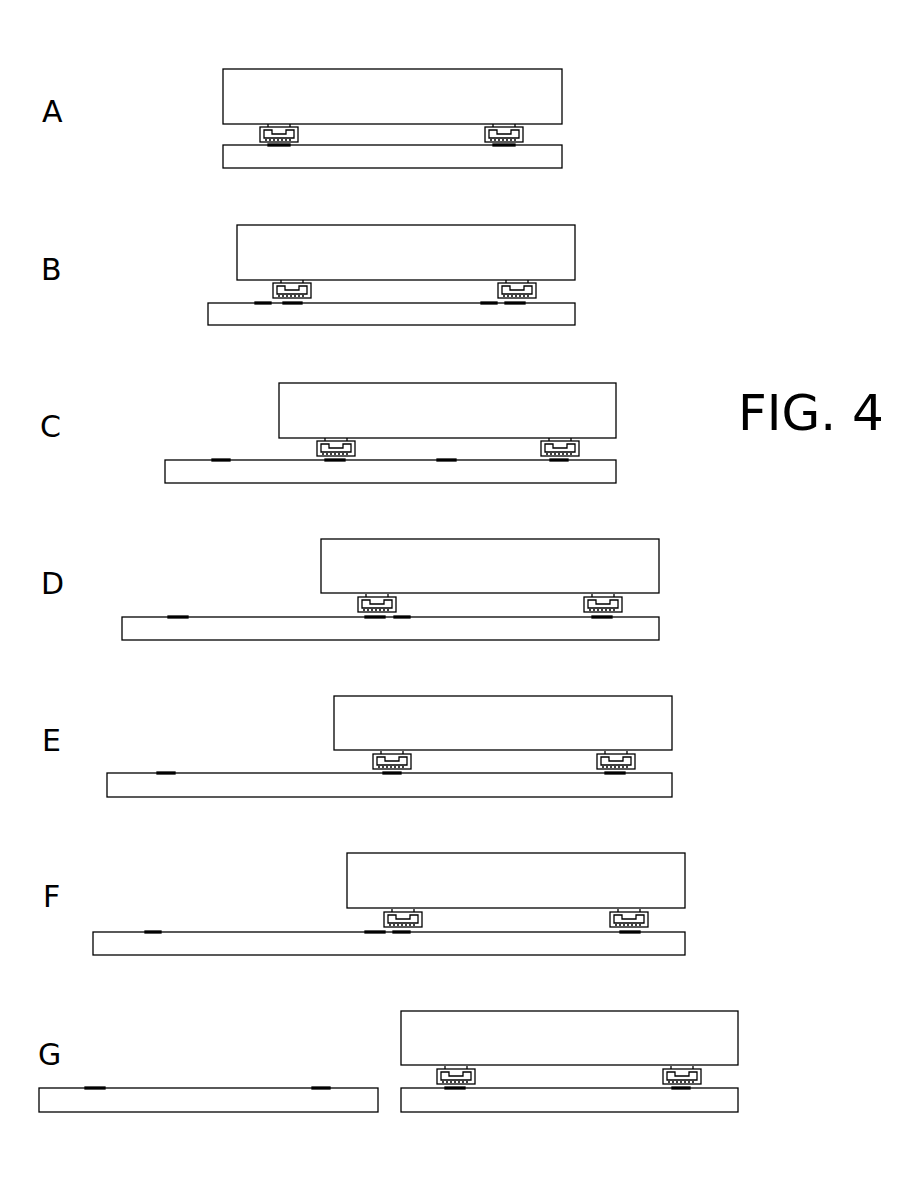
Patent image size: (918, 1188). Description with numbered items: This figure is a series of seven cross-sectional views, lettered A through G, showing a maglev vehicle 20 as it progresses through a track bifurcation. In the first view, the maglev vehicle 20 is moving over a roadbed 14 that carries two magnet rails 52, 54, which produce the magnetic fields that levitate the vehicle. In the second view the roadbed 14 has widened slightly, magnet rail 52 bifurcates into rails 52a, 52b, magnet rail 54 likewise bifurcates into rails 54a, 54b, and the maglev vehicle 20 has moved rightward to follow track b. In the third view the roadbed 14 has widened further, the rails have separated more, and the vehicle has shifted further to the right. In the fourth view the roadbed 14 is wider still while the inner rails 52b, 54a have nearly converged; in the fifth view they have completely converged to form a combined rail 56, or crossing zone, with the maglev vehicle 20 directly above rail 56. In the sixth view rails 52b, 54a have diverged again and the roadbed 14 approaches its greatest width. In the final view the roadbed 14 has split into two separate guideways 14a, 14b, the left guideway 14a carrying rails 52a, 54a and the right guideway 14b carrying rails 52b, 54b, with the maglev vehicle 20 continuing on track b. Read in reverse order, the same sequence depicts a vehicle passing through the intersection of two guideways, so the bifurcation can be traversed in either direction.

The maglev vehicle 20 is at (544, 77).
The roadbed 14 is at (553, 150).
The guideway 14a is at (203, 1100).
The guideway 14b is at (722, 1100).
The magnet rail 52 is at (290, 147).
The magnet rail 54 is at (494, 147).
The rail 52a is at (260, 305).
The rail 52b is at (292, 305).
The rail 54a is at (488, 305).
The rail 54b is at (516, 305).
The combined rail 56 is at (392, 775).